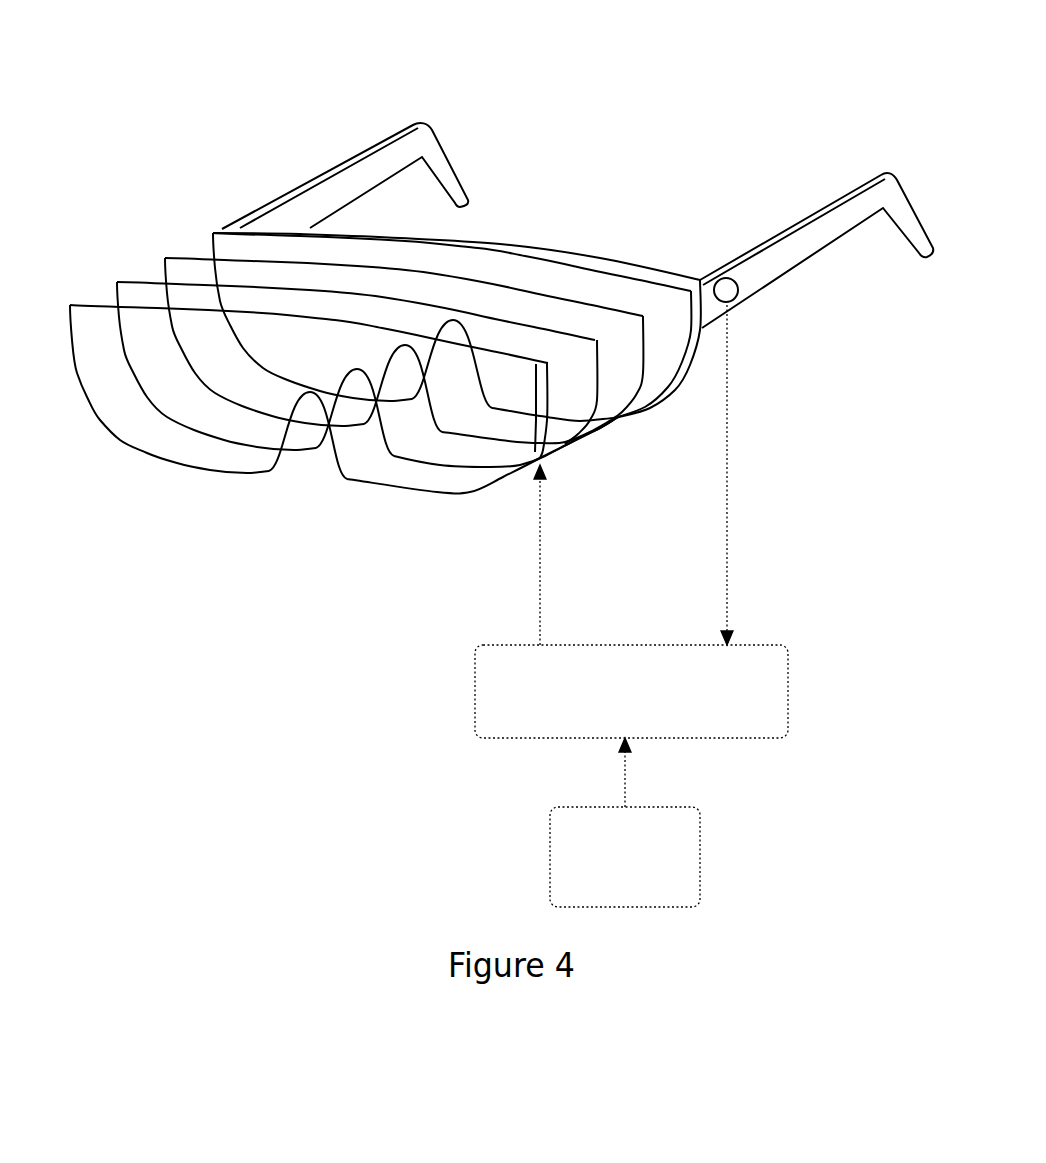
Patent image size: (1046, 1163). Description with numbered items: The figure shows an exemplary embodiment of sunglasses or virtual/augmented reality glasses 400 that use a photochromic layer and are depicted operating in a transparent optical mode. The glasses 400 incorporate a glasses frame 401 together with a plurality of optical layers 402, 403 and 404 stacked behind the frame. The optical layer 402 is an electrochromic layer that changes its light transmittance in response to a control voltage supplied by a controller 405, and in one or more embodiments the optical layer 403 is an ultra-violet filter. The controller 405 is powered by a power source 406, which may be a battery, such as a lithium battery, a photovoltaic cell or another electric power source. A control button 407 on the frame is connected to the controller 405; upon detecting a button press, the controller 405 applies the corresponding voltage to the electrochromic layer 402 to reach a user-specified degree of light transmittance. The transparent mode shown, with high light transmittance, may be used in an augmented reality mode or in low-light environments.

The sunglasses or virtual/augmented reality glasses 400 is at (582, 73).
The glasses frame 401 is at (784, 220).
The electrochromic layer 402 is at (560, 457).
The optical layer 403 is at (390, 492).
The optical layer 404 is at (610, 432).
The controller 405 is at (475, 690).
The power source 406 is at (550, 862).
The control button 407 is at (717, 262).